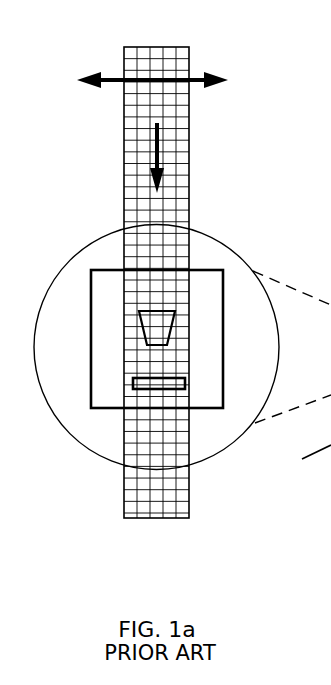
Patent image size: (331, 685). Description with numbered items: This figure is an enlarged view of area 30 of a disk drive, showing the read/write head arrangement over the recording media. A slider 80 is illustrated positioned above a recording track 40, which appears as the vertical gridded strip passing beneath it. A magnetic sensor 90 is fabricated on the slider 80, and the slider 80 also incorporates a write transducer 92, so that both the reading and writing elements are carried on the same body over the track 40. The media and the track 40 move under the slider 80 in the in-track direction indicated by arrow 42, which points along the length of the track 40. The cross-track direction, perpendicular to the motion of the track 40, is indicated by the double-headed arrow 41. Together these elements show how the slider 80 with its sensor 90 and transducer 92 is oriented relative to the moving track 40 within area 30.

The area 30 is at (237, 438).
The recording track 40 is at (157, 47).
The arrow indicating cross-track direction 41 is at (228, 80).
The arrow indicating in-track direction 42 is at (160, 150).
The slider 80 is at (91, 337).
The magnetic sensor 90 is at (147, 390).
The write transducer 92 is at (139, 312).